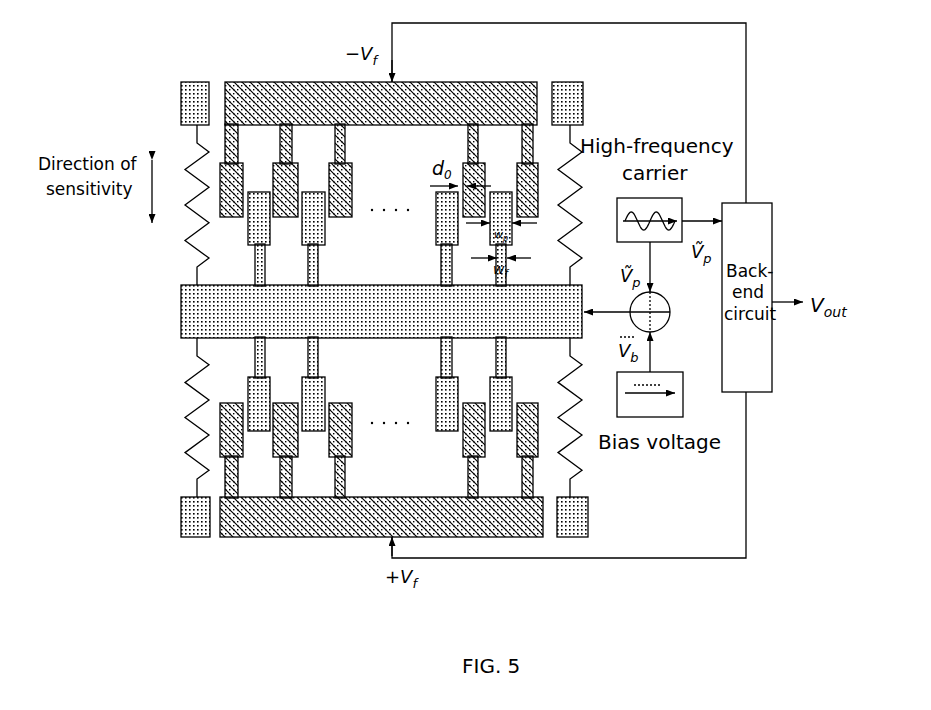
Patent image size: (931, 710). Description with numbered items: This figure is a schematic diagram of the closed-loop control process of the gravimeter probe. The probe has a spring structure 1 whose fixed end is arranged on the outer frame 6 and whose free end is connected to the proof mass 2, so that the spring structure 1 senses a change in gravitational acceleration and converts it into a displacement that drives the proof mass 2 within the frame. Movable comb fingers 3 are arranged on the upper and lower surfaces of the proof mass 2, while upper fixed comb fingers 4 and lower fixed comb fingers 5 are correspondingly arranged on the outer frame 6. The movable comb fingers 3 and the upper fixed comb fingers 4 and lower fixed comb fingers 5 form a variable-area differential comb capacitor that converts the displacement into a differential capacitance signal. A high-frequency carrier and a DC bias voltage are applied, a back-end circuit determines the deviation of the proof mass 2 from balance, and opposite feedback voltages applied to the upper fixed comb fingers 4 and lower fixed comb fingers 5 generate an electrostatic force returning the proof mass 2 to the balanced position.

The spring structure 1 is at (204, 358).
The proof mass 2 is at (205, 309).
The movable comb finger 3 is at (258, 224).
The upper fixed comb finger 4 is at (234, 177).
The lower fixed comb finger 5 is at (238, 424).
The outer frame 6 is at (258, 104).